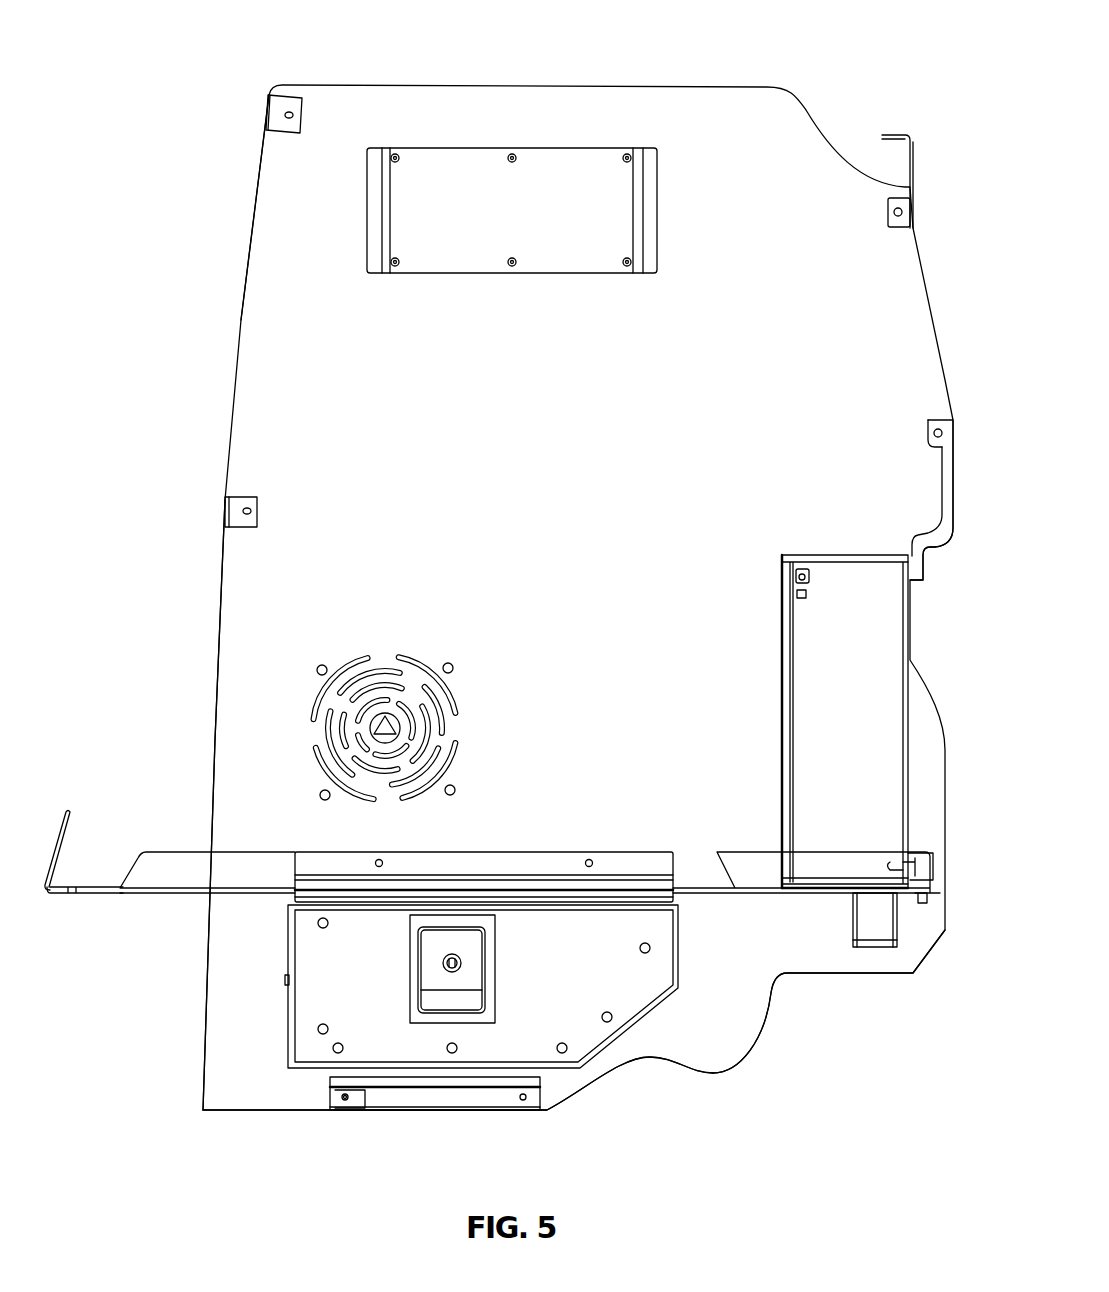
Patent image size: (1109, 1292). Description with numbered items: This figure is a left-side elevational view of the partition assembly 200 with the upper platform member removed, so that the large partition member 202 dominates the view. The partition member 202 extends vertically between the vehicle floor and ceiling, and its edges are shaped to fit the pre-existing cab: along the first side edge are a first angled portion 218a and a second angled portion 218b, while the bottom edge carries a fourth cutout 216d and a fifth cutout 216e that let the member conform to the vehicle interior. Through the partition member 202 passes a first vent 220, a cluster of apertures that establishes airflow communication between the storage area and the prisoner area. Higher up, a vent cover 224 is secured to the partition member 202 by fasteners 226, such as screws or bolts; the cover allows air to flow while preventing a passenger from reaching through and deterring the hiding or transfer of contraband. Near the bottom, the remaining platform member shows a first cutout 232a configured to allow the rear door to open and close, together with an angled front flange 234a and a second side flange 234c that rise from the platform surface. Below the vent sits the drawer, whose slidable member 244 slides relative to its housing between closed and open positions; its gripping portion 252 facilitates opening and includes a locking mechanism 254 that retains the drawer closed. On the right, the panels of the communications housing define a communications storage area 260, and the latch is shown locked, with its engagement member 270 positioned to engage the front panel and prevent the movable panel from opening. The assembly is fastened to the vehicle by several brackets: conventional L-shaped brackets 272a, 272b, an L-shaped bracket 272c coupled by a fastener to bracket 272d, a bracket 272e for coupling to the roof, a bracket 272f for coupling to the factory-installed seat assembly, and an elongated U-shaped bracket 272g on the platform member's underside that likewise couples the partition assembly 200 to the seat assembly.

The partition assembly 200 is at (742, 42).
The partition member 202 is at (265, 322).
The first angled portion 218a is at (218, 615).
The second angled portion 218b is at (255, 205).
The fourth cutout 216d is at (775, 985).
The fifth cutout 216e is at (648, 1060).
The first vent 220 is at (423, 703).
The vent cover 224 is at (481, 208).
The fasteners 226 is at (397, 157).
The first cutout 232a is at (90, 897).
The front flange 234a is at (68, 812).
The second side flange 234c is at (175, 877).
The slidable member 244 is at (615, 988).
The gripping portion 252 is at (432, 962).
The locking mechanism 254 is at (452, 972).
The communications storage area 260 is at (873, 640).
The engagement member 270 is at (803, 575).
The bracket 272a is at (275, 105).
The bracket 272b is at (235, 518).
The L-shaped bracket 272c is at (438, 1078).
The bracket 272d is at (358, 1100).
The bracket 272e is at (915, 147).
The bracket 272f is at (933, 426).
The elongated U-shaped bracket 272g is at (873, 947).